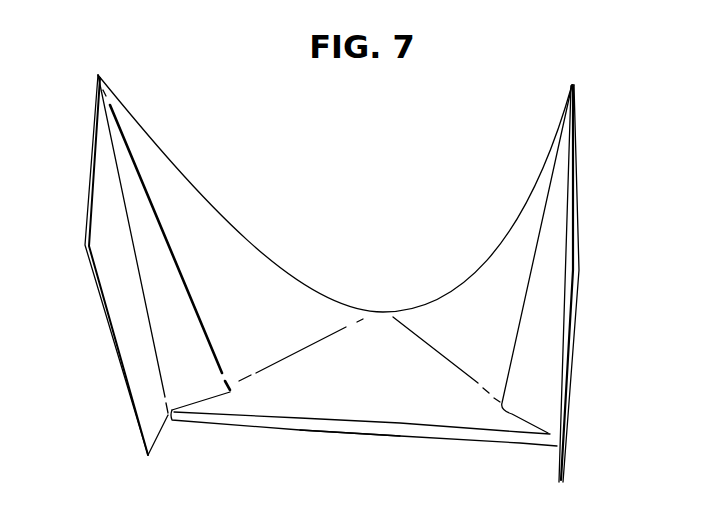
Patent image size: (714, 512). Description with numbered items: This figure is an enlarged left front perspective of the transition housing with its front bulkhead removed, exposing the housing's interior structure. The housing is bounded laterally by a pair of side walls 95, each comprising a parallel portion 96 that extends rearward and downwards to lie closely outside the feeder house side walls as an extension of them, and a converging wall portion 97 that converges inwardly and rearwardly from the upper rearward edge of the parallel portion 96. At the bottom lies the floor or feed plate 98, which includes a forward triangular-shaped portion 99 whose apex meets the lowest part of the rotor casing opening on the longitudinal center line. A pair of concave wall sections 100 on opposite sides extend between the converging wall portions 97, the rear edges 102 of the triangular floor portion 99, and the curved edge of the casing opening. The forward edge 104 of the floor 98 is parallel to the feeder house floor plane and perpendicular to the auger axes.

The side walls 95 is at (98, 316).
The parallel portions 96 is at (120, 260).
The converging wall portions 97 is at (171, 368).
The floor 98 is at (407, 437).
The triangular-shaped portion 99 is at (361, 373).
The concave wall sections 100 is at (215, 292).
The rear edges 102 is at (299, 352).
The forward edge 104 is at (295, 428).